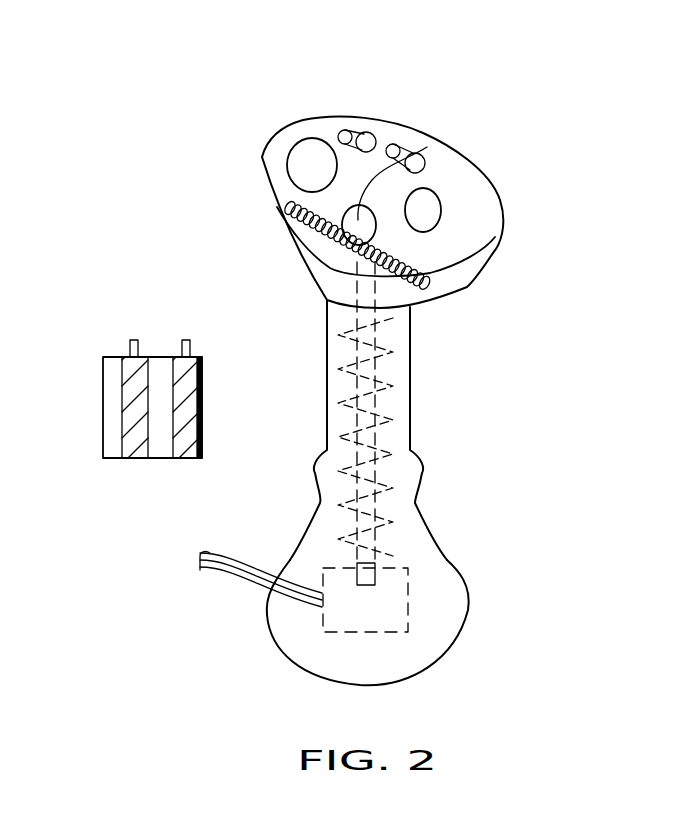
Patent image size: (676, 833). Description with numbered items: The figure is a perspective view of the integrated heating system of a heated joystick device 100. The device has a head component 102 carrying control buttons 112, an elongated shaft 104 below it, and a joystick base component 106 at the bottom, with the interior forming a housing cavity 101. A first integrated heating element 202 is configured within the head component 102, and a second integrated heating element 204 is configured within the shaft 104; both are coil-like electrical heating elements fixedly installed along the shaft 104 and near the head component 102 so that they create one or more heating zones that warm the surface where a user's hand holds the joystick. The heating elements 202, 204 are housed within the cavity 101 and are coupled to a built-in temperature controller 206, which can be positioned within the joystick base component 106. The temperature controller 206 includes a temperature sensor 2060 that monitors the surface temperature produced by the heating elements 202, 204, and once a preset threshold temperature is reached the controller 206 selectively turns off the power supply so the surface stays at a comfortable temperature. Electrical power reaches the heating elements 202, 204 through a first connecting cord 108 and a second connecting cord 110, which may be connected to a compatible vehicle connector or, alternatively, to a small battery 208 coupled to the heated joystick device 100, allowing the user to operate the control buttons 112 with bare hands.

The heated joystick device 100 is at (240, 115).
The housing cavity 101 is at (467, 285).
The head component 102 is at (488, 190).
The shaft 104 is at (410, 392).
The joystick base component 106 is at (440, 663).
The first connecting cord 108 is at (397, 300).
The second connecting cord 110 is at (410, 310).
The control buttons 112 is at (423, 210).
The first integrated heating element 202 is at (272, 202).
The second integrated heating element 204 is at (390, 410).
The temperature controller 206 is at (408, 602).
The temperature sensor 2060 is at (363, 577).
The battery 208 is at (117, 357).